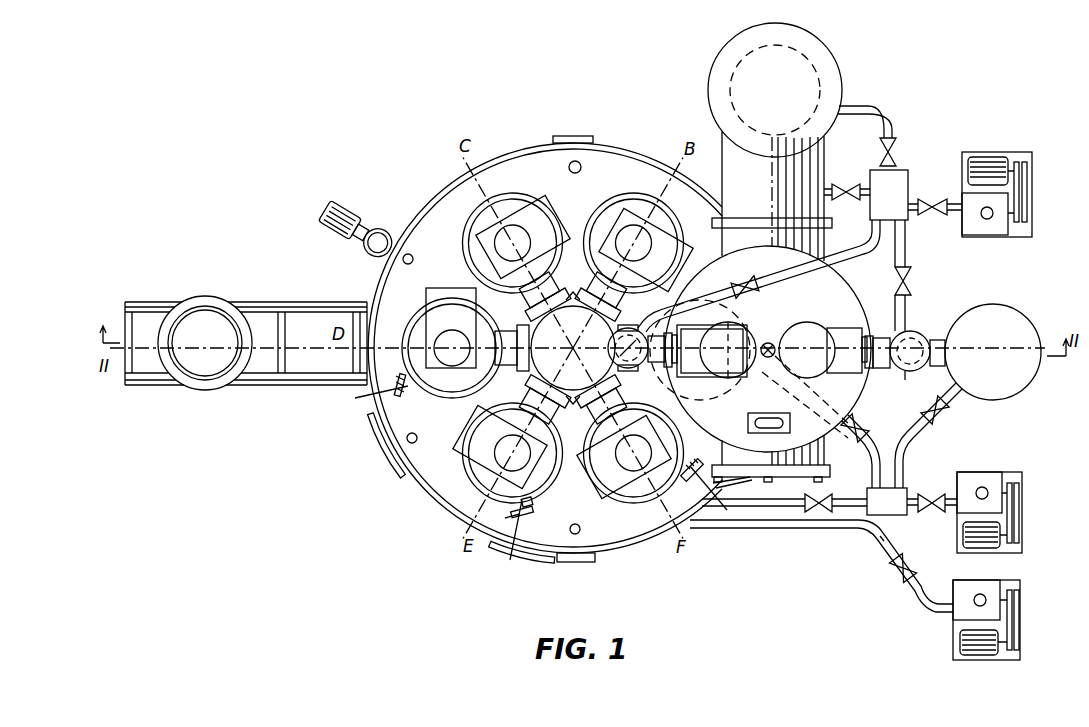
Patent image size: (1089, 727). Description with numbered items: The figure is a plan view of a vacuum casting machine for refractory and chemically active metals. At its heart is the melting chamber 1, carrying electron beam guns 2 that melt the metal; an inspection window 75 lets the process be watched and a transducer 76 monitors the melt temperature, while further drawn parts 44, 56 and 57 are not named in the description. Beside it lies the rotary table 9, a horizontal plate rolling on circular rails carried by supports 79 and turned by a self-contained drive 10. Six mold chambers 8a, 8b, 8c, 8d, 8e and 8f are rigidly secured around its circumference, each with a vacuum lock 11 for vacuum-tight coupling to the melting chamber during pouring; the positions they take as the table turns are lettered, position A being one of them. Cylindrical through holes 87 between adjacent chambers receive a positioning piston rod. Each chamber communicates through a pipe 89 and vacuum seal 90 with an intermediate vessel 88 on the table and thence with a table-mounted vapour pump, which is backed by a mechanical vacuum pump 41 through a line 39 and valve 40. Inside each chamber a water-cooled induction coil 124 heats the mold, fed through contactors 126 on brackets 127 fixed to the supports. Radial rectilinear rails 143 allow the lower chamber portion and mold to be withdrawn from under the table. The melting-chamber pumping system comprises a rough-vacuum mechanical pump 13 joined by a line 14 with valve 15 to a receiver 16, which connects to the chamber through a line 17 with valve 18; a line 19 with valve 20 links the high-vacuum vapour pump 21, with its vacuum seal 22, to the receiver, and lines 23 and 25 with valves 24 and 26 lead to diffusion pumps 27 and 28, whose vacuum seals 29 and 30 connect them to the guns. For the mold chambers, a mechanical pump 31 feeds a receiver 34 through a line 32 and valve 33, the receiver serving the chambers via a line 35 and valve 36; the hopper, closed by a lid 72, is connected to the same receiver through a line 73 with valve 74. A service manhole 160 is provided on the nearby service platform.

The melting chamber 1 is at (860, 302).
The electron beam guns 2 is at (728, 336).
The mold chamber 8a is at (420, 318).
The mold chamber 8b is at (545, 472).
The mold chamber 8c is at (638, 500).
The mold chamber 8d is at (628, 372).
The mold chamber 8e is at (638, 198).
The mold chamber 8f is at (512, 198).
The rotary table 9 is at (448, 525).
The drive 10 is at (350, 220).
The vacuum lock 11 is at (590, 496).
The rough-vacuum mechanical pump 13 is at (990, 236).
The line 14 is at (937, 198).
The valve 15 is at (922, 213).
The receiver 16 is at (900, 180).
The line 17 is at (862, 184).
The valve 18 is at (840, 197).
The line 19 is at (874, 118).
The valve 20 is at (892, 154).
The high-vacuum vapour pump 21 is at (808, 76).
The vacuum seal 22 is at (836, 88).
The line 23 is at (908, 254).
The valve 24 is at (912, 282).
The line 25 is at (866, 250).
The valve 26 is at (744, 282).
The diffusion pump 27 is at (915, 342).
The diffusion pump 28 is at (614, 356).
The vacuum seal 29 is at (905, 380).
The vacuum seal 30 is at (614, 342).
The mechanical pump 31 is at (1022, 484).
The line 32 is at (948, 508).
The valve 33 is at (930, 510).
The receiver 34 is at (902, 516).
The line 35 is at (778, 498).
The valve 36 is at (819, 530).
The line 39 is at (880, 552).
The valve 40 is at (895, 580).
The mechanical vacuum pump 41 is at (1020, 590).
The holder support 44 is at (850, 375).
The conduit 56 is at (870, 468).
The valve 57 is at (860, 432).
The lid 72 is at (1022, 330).
The line 73 is at (904, 450).
The valve 74 is at (940, 424).
The inspection window 75 is at (790, 424).
The transducer 76 is at (768, 342).
The supports 79 is at (597, 562).
The through holes 87 is at (413, 258).
The intermediate vessel 88 is at (573, 291).
The pipe 89 is at (530, 405).
The vacuum seal 90 is at (575, 405).
The induction coil 124 is at (533, 503).
The contactors 126 is at (515, 516).
The brackets 127 is at (396, 396).
The rectilinear rails 143 is at (316, 386).
The service manhole 160 is at (815, 455).
The position A is at (726, 392).